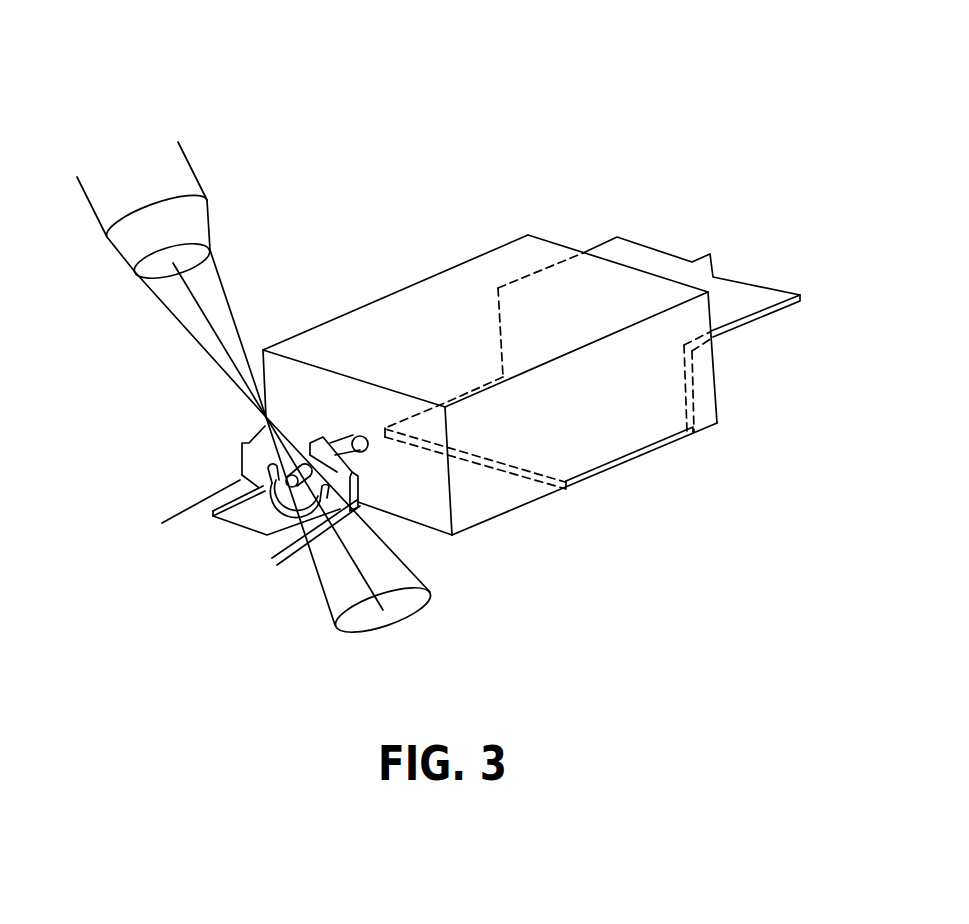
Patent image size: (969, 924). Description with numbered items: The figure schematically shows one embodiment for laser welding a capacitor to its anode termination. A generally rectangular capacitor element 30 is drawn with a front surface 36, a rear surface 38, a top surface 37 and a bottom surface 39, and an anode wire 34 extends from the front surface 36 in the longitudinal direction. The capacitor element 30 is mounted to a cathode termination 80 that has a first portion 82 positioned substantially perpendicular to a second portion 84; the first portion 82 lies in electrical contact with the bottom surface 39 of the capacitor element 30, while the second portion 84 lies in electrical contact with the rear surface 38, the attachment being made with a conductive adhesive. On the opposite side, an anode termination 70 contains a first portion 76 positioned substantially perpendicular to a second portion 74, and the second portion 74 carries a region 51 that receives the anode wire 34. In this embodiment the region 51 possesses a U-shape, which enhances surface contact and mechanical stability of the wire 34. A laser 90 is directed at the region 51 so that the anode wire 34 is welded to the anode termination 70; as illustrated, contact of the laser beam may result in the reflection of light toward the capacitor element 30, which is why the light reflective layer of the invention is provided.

The capacitor element 30 is at (484, 371).
The anode wire 34 is at (348, 447).
The front surface 36 is at (418, 497).
The top surface 37 is at (367, 330).
The rear surface 38 is at (558, 243).
The bottom surface 39 is at (507, 513).
The region 51 is at (287, 483).
The anode termination 70 is at (215, 549).
The second portion 74 is at (252, 453).
The first portion 76 is at (287, 553).
The cathode termination 80 is at (672, 253).
The first portion 82 is at (640, 463).
The second portion 84 is at (688, 383).
The laser 90 is at (143, 157).